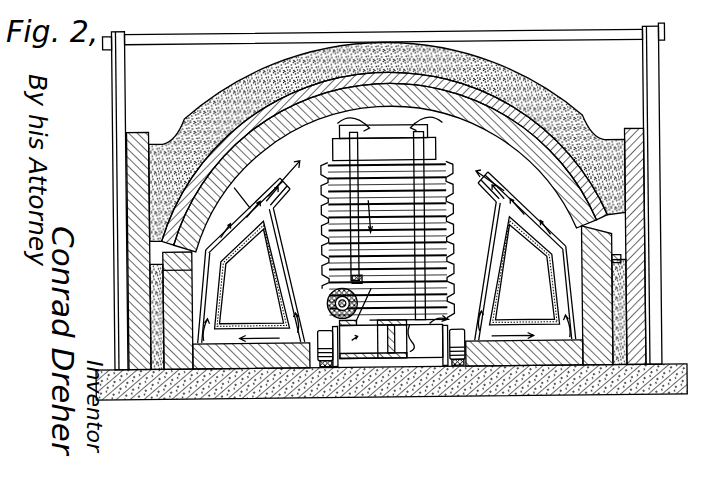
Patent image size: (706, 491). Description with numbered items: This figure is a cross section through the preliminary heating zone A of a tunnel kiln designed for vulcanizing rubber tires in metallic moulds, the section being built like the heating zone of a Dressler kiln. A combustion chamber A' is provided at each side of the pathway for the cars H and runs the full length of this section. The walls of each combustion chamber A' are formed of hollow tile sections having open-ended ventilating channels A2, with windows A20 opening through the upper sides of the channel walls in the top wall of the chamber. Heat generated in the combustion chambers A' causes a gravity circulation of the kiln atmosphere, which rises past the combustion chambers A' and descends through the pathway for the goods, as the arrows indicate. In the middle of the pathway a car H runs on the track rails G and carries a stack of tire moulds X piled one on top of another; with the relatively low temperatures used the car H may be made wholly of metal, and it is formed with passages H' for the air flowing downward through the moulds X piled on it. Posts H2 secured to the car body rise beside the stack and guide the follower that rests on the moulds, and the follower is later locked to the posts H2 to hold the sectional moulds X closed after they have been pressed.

The windows A20 is at (213, 147).
The preliminary heating zone A is at (385, 196).
The posts H2 is at (352, 206).
The ventilating channels A2 is at (278, 256).
The combustion chamber A' is at (386, 272).
The tire moulds X is at (330, 299).
The track rails G is at (327, 367).
The cars H is at (391, 374).
The passages H' is at (421, 372).